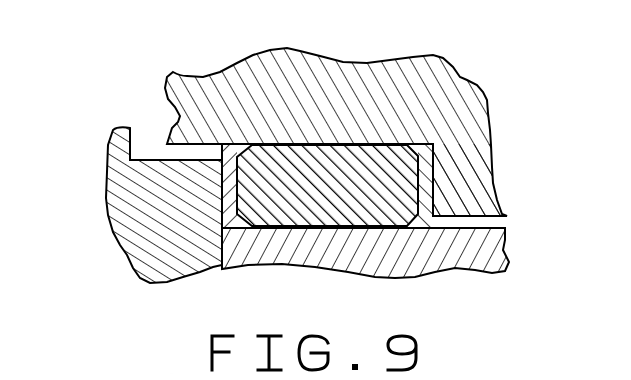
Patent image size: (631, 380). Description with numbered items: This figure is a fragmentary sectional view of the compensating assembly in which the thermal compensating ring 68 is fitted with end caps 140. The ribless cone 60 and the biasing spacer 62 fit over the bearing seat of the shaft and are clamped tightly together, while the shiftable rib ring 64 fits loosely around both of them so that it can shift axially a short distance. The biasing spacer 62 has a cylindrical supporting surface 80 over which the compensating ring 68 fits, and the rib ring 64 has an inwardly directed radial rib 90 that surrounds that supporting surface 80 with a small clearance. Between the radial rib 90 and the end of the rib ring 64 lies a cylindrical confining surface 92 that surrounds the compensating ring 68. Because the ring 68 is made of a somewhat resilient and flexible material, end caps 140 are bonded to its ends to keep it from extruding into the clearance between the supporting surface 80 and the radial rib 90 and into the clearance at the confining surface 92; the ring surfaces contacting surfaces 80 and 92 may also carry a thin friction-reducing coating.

The ribless cone 60 is at (150, 257).
The biasing spacer 62 is at (440, 252).
The shiftable rib ring 64 is at (430, 70).
The thermal compensating ring 68 is at (303, 146).
The cylindrical supporting surface 80 is at (343, 209).
The radial rib 90 is at (467, 160).
The cylindrical confining surface 92 is at (342, 150).
The end caps 140 is at (234, 184).